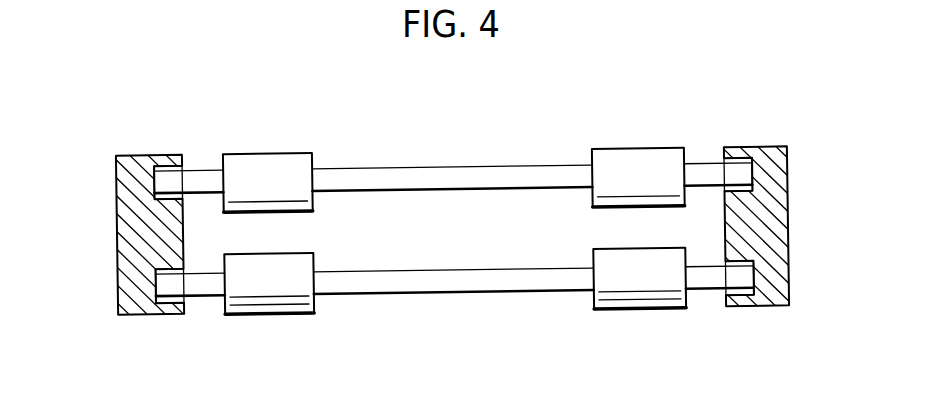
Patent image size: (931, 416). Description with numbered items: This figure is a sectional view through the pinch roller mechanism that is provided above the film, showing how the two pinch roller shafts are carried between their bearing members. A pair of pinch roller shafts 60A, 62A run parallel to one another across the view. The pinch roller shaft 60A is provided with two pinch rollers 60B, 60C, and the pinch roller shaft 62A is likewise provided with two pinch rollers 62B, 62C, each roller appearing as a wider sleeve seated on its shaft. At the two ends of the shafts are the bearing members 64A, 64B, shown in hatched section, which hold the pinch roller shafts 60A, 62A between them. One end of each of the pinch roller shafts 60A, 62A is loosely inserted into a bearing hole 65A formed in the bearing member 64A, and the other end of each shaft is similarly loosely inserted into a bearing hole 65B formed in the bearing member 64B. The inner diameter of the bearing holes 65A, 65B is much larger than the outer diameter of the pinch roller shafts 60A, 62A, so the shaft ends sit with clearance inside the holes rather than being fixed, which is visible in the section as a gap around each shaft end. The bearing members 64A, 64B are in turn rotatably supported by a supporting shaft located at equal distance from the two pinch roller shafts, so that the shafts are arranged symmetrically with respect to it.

The pinch roller shaft 60A is at (418, 293).
The pinch roller 60B is at (267, 309).
The pinch roller 60C is at (625, 310).
The pinch roller shaft 62A is at (393, 168).
The pinch roller 62B is at (285, 160).
The pinch roller 62C is at (642, 157).
The bearing member 64A is at (117, 247).
The bearing member 64B is at (788, 236).
The bearing hole 65A is at (170, 172).
The bearing hole 65B is at (735, 168).